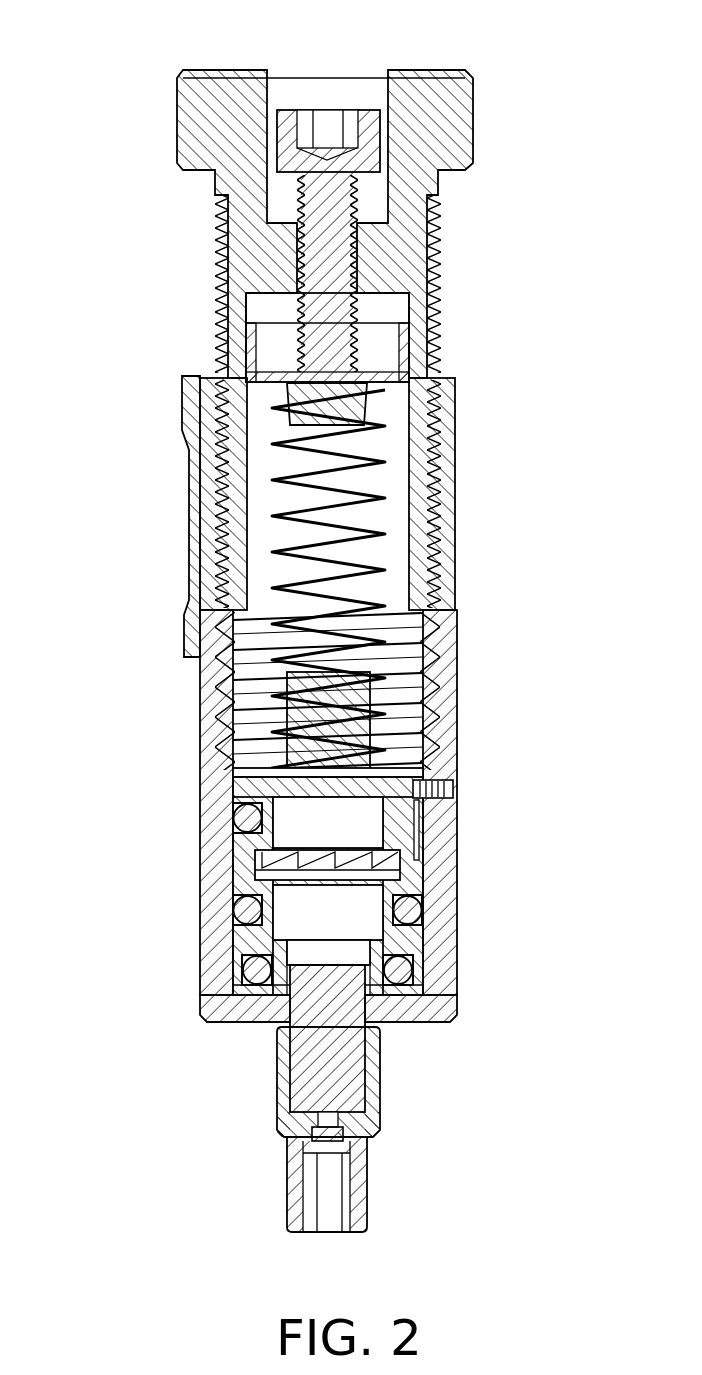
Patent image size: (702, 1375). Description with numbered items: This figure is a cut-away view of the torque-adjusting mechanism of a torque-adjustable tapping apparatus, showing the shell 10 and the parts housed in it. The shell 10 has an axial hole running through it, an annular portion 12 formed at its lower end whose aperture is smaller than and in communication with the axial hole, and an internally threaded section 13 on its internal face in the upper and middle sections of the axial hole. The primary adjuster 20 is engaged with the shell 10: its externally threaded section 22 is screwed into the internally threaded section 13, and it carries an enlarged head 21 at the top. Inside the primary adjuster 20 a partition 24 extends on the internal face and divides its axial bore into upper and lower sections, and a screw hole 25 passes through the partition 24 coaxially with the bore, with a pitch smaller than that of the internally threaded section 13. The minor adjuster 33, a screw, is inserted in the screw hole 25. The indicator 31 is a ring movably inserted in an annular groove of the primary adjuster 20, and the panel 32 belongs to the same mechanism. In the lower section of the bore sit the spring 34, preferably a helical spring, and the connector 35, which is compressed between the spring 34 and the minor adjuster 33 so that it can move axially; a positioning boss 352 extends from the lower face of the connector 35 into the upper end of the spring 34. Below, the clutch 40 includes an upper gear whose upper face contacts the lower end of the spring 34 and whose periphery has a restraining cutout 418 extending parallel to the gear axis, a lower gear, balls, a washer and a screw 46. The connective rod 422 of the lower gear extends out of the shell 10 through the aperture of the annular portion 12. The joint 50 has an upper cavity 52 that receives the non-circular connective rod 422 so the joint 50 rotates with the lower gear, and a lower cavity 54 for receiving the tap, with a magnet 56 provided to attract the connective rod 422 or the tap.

The shell 10 is at (343, 843).
The annular portion 12 is at (398, 1013).
The internally threaded section 13 is at (423, 673).
The primary adjuster 20 is at (328, 226).
The enlarged head 21 is at (205, 105).
The externally threaded section 22 is at (228, 318).
The partition 24 is at (385, 255).
The screw hole 25 is at (300, 262).
The indicator 31 is at (198, 428).
The panel 32 is at (286, 516).
The minor adjuster 33 is at (290, 190).
The spring 34 is at (365, 563).
The connector 35 is at (409, 325).
The positioning boss 352 is at (363, 407).
The clutch 40 is at (336, 833).
The screw 46 is at (452, 790).
The restraining cutout 418 is at (418, 830).
The connective rod 422 is at (313, 1055).
The joint 50 is at (307, 1124).
The upper cavity 52 is at (298, 1083).
The lower cavity 54 is at (313, 1207).
The magnet 56 is at (343, 1134).